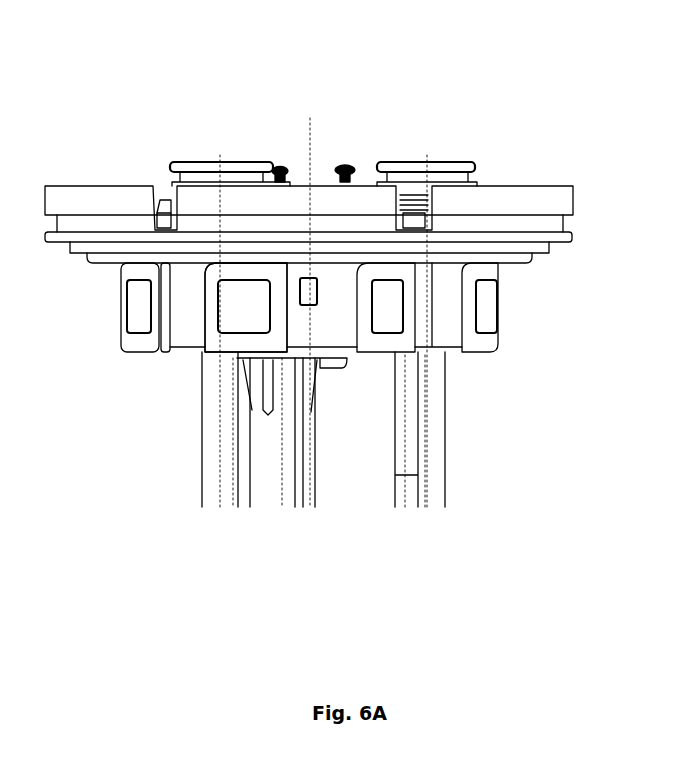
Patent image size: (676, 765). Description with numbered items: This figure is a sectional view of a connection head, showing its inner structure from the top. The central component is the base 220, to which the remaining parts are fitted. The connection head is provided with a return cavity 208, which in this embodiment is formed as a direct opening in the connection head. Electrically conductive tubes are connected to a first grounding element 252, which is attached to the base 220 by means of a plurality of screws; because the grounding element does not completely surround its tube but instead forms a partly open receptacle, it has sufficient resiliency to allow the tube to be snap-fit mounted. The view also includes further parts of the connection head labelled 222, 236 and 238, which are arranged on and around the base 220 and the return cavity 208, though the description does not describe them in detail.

The return cavity 208 is at (318, 278).
The base 220 is at (443, 308).
The mounting plate 222 is at (547, 223).
The housing block 236 is at (215, 343).
The window opening 238 is at (228, 308).
The first grounding element 252 is at (18, 398).